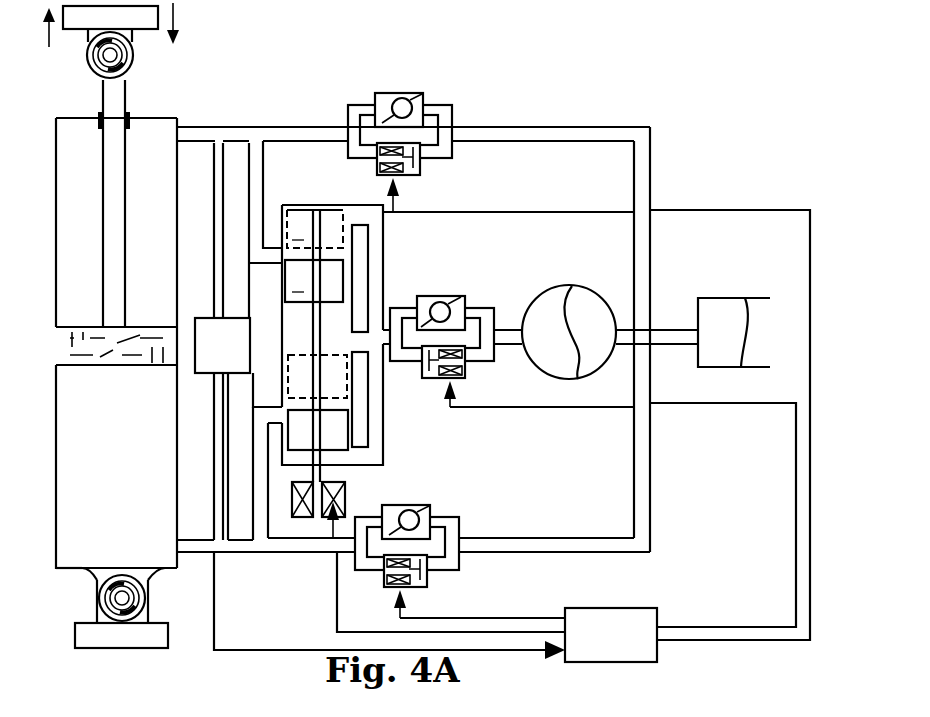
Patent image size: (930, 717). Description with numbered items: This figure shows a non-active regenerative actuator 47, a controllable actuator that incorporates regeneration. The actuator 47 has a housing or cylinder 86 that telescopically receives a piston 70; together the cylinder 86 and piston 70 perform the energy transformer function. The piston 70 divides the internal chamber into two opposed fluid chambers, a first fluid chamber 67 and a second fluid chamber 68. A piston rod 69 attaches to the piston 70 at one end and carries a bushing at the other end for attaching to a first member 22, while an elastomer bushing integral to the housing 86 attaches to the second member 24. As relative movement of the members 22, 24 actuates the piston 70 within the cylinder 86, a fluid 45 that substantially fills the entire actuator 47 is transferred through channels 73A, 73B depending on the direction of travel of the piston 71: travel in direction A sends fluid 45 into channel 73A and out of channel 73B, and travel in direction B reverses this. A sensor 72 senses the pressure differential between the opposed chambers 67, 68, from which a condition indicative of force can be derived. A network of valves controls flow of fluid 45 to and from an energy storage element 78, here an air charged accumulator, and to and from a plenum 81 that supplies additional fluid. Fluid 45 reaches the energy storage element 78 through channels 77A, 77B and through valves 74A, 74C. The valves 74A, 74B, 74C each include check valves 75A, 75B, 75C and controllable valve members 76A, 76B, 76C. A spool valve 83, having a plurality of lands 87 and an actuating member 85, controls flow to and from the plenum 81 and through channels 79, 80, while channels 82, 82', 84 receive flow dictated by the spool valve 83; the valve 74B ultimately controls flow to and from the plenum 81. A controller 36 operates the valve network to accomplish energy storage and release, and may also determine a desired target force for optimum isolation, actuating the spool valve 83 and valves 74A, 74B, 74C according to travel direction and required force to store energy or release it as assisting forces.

The first member 22 is at (104, 26).
The second member 24 is at (113, 644).
The controller 36 is at (601, 643).
The fluid 45 is at (137, 404).
The non-active regenerative actuator 47 is at (249, 56).
The first fluid chamber 67 is at (104, 463).
The second fluid chamber 68 is at (66, 226).
The piston rod 69 is at (127, 86).
The piston 70 is at (112, 366).
The piston 71 is at (140, 328).
The sensor 72 is at (213, 354).
The channel 73A is at (201, 127).
The channel 73B is at (182, 556).
The valve 74A is at (491, 134).
The valve 74B is at (512, 355).
The valve 74C is at (462, 539).
The check valve 75A is at (388, 93).
The check valve 75B is at (448, 296).
The check valve 75C is at (400, 505).
The controllable valve member 76A is at (423, 172).
The controllable valve member 76B is at (438, 379).
The controllable valve member 76C is at (430, 583).
The channel 77A is at (650, 156).
The channel 77B is at (652, 473).
The energy storage element 78 is at (713, 345).
The channel 79 is at (263, 169).
The channel 80 is at (247, 497).
The plenum 81 is at (539, 345).
The channel 82 is at (360, 335).
The channel 82' is at (345, 336).
The spool valve 83 is at (255, 298).
The channel 84 is at (392, 416).
The actuating member 85 is at (348, 504).
The housing or cylinder 86 is at (58, 543).
The lands 87 is at (318, 346).